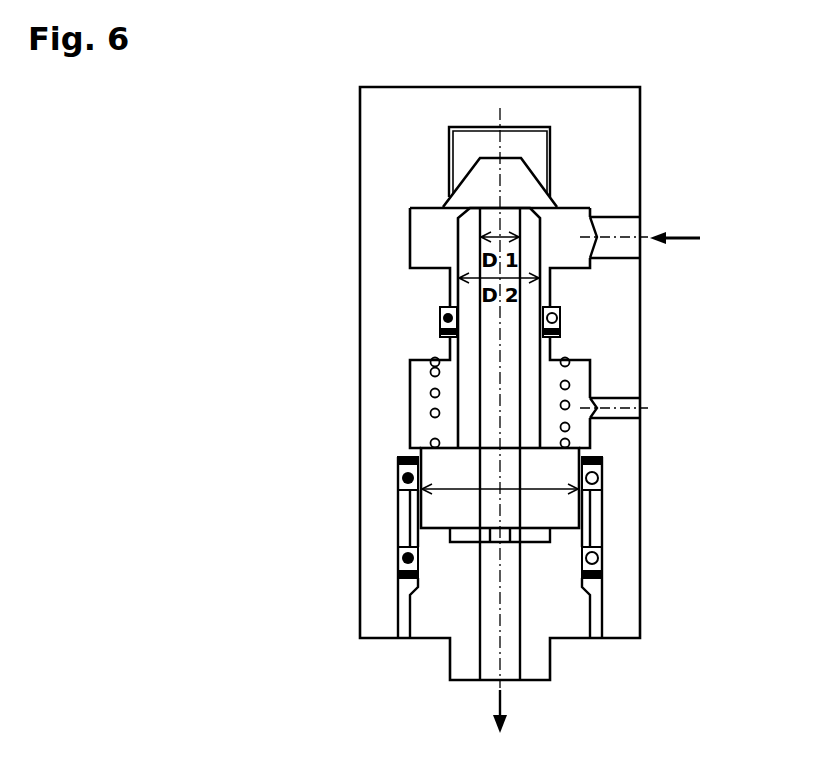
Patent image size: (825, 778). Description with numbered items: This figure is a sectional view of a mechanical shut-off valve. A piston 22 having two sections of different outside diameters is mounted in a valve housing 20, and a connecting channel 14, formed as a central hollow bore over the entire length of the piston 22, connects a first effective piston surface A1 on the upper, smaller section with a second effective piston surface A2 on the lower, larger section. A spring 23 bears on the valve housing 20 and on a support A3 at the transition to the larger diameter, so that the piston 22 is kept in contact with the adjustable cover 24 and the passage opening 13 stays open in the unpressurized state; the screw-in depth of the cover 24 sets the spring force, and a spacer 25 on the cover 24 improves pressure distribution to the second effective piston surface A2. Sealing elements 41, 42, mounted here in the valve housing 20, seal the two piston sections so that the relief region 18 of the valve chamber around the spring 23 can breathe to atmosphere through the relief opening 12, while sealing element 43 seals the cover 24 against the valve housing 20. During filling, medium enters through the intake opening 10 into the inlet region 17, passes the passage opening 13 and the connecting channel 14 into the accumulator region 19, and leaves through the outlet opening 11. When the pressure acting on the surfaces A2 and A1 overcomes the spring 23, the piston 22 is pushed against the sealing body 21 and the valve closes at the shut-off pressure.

The intake opening 10 is at (633, 232).
The outlet opening 11 is at (512, 660).
The relief opening 12 is at (633, 405).
The passage opening 13 is at (457, 205).
The connecting channel 14 is at (503, 337).
The valve chamber, inlet region 17 is at (430, 248).
The valve chamber, relief region 18 is at (447, 380).
The valve chamber, accumulator region 19 is at (412, 520).
The valve housing 20 is at (617, 134).
The sealing body 21 is at (465, 138).
The piston 22 is at (472, 232).
The spring 23 is at (430, 433).
The cover 24 is at (572, 617).
The spacer 25 is at (560, 537).
The sealing element 41 is at (407, 482).
The sealing element 42 is at (445, 322).
The sealing element 43 is at (402, 558).
The first effective piston surface A1 is at (520, 198).
The second effective piston surface A2 is at (472, 548).
The support A3 is at (545, 430).